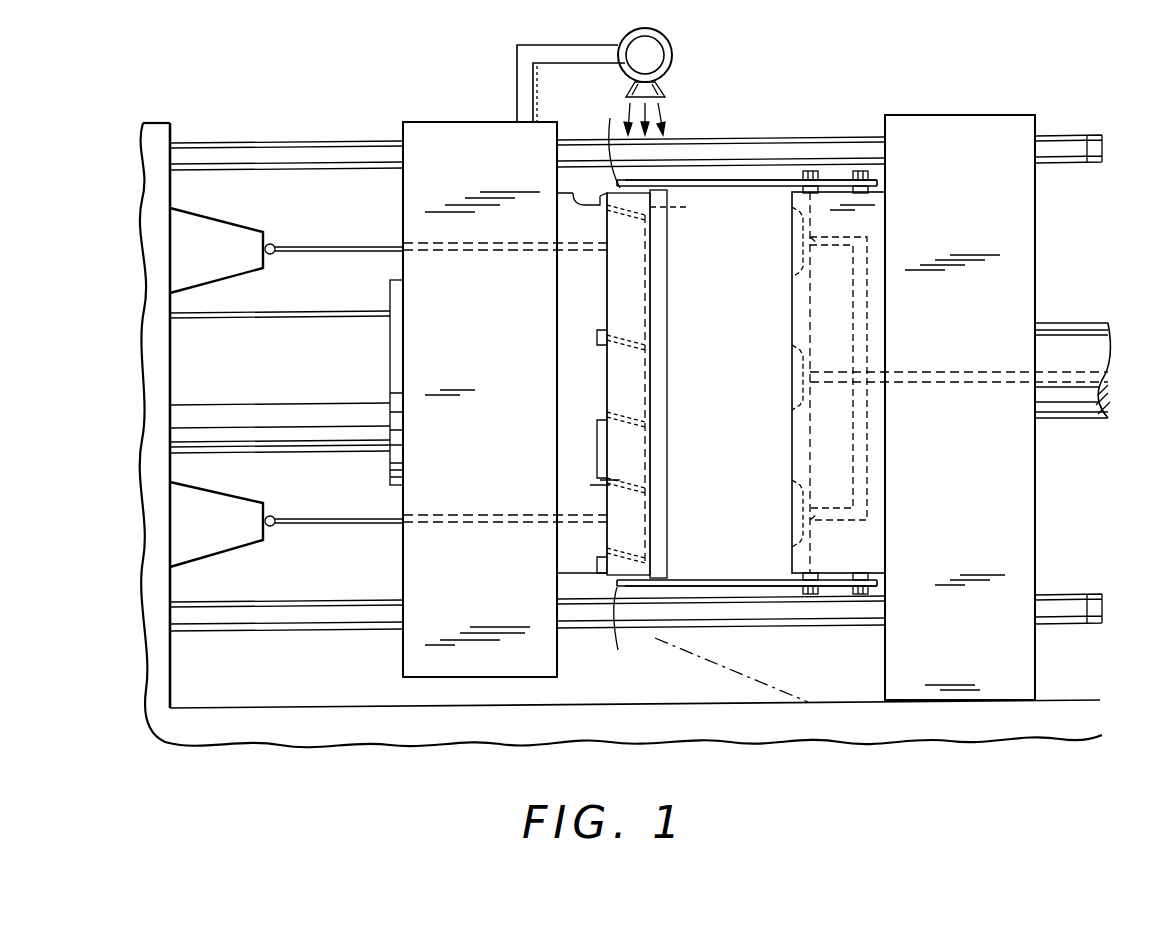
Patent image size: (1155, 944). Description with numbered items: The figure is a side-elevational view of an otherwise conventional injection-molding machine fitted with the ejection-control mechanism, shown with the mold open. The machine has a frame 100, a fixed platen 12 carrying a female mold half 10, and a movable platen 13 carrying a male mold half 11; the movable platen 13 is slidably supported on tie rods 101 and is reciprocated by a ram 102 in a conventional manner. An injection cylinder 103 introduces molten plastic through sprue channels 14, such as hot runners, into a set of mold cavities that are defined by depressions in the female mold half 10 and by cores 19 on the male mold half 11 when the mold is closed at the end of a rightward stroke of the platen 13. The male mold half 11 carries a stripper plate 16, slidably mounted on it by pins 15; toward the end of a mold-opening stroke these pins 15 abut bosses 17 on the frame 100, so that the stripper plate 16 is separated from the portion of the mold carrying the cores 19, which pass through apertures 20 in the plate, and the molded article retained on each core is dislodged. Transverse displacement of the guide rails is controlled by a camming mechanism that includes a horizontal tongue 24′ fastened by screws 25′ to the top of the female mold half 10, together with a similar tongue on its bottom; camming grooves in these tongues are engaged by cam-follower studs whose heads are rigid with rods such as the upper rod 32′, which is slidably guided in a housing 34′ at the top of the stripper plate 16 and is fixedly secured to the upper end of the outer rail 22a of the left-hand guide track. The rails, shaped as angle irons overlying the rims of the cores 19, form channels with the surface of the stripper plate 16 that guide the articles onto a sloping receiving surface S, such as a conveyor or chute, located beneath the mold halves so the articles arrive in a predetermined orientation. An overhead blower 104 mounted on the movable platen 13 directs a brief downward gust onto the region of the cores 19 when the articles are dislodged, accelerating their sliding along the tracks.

The female mold half 10 is at (880, 222).
The male mold half 11 is at (587, 565).
The fixed platen 12 is at (932, 132).
The movable platen 13 is at (467, 140).
The sprue channels 14 is at (848, 335).
The pins 15 is at (325, 256).
The stripper plate 16 is at (581, 188).
The bosses 17 is at (238, 240).
The cores 19 is at (648, 352).
The apertures 20 is at (686, 208).
The outer rail 22a is at (668, 385).
The tongue 24′ is at (760, 187).
The screws 25′ is at (860, 170).
The rod 32′ is at (640, 185).
The housing 34′ is at (598, 141).
The frame 100 is at (160, 150).
The tie rods 101 is at (338, 120).
The ram 102 is at (292, 340).
The injection cylinder 103 is at (1075, 345).
The overhead blower 104 is at (672, 55).
The receiving surface S is at (672, 632).